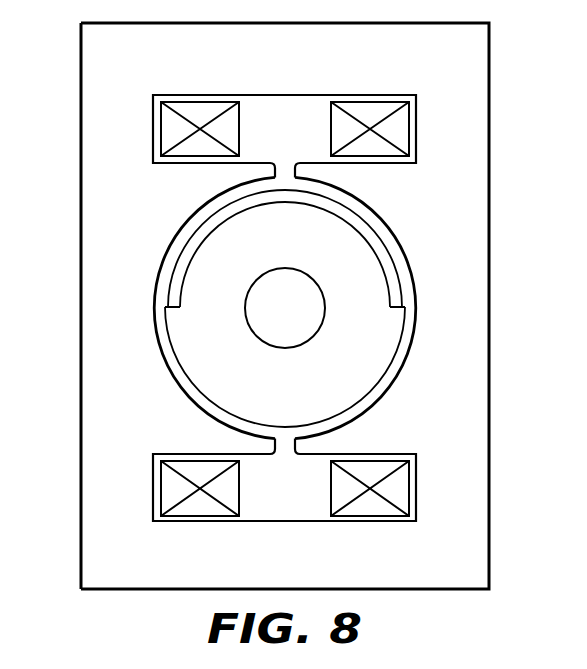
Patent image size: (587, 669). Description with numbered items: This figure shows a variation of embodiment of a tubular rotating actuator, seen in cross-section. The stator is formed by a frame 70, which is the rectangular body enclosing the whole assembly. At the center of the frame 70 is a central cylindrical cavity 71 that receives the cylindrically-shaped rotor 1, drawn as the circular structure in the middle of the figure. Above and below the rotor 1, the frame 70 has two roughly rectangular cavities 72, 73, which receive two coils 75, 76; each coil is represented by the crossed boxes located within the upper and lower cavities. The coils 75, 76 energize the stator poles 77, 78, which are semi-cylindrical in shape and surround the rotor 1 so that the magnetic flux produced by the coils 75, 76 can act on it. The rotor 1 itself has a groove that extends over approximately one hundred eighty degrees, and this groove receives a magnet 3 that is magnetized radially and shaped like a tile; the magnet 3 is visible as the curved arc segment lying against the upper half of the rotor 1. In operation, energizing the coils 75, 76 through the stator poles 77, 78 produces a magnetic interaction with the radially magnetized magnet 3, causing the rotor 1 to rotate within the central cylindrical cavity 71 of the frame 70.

The rotor 1 is at (175, 383).
The magnet 3 is at (185, 257).
The frame 70 is at (475, 313).
The central cylindrical cavity 71 is at (366, 220).
The rectangular cavity 72 is at (285, 120).
The rectangular cavity 73 is at (285, 507).
The coil 75 is at (382, 110).
The coil 76 is at (187, 110).
The stator pole 77 is at (405, 367).
The stator pole 78 is at (117, 300).